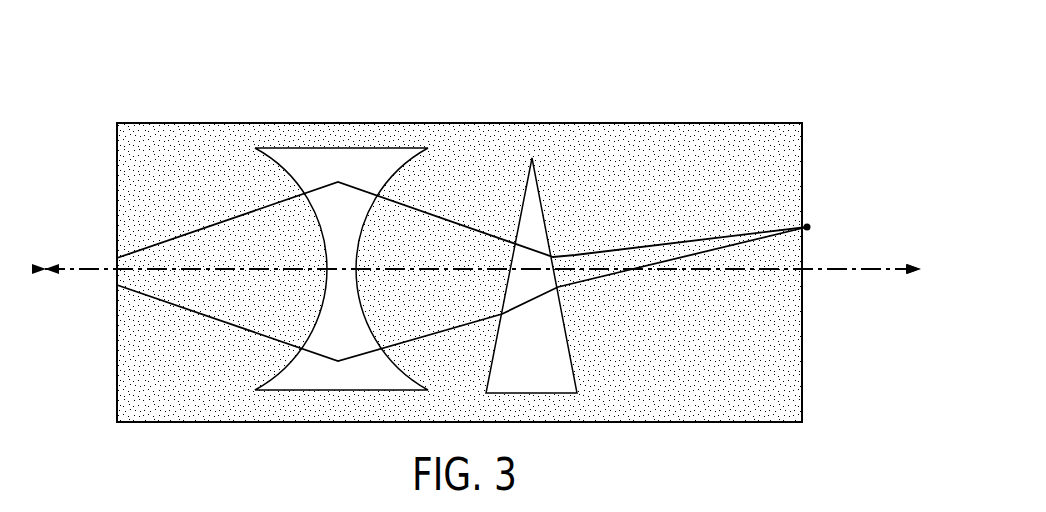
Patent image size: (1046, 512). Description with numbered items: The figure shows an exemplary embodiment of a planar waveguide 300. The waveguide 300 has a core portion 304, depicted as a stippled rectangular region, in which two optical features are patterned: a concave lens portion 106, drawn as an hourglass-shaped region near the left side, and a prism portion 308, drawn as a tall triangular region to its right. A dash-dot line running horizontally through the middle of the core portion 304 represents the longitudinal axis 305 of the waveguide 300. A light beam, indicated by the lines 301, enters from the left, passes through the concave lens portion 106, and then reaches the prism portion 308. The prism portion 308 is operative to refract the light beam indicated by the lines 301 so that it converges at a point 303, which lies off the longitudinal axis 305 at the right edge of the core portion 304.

The waveguide 300 is at (482, 217).
The lines 301 is at (207, 226).
The concave lens portion 106 is at (322, 160).
The point 303 is at (811, 225).
The core portion 304 is at (638, 132).
The longitudinal axis 305 is at (868, 273).
The prism portion 308 is at (533, 202).